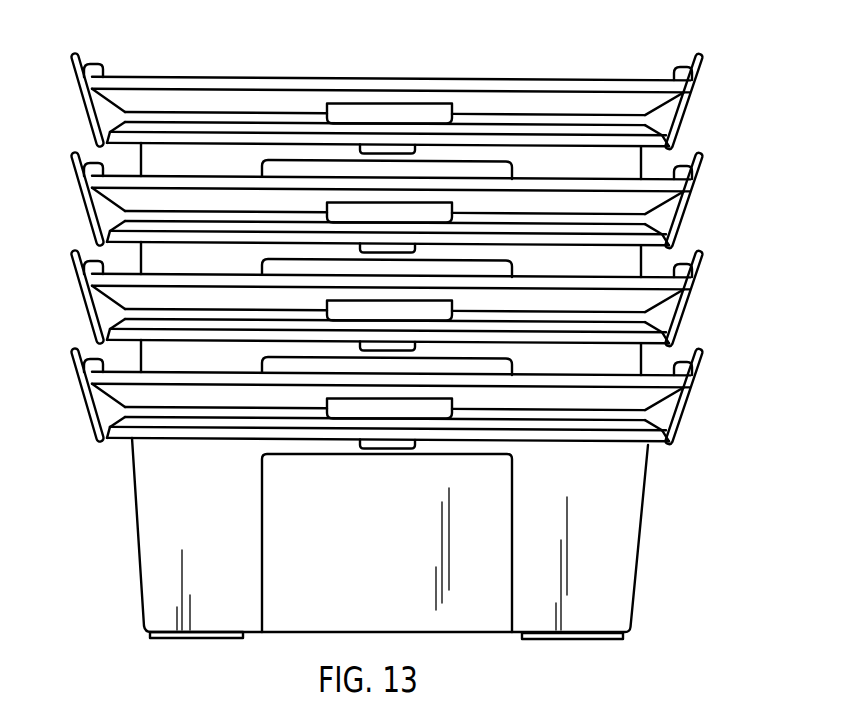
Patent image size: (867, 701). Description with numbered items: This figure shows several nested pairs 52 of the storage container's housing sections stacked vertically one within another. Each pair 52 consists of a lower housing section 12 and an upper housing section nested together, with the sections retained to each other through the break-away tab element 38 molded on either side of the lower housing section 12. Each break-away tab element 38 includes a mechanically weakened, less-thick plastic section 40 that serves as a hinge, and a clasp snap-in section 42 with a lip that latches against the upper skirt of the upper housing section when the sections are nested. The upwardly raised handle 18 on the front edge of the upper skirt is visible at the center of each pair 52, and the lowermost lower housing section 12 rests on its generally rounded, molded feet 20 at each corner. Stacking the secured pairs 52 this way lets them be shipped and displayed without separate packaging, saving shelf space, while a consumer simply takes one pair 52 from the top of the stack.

The lower housing section 12 is at (391, 498).
The handle 18 is at (402, 113).
The feet 20 is at (212, 640).
The break-away tab element 38 is at (90, 412).
The mechanically weakened section 40 is at (108, 443).
The clasp snap-in section 42 is at (85, 352).
The nested pair arrangement 52 is at (715, 42).